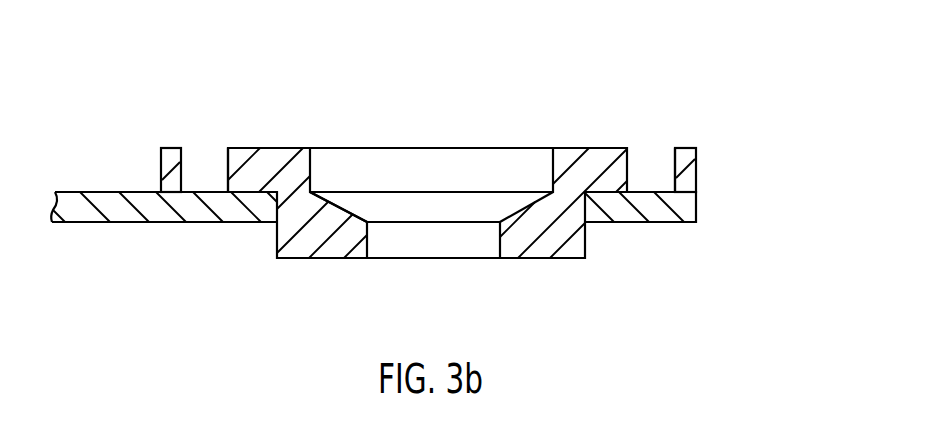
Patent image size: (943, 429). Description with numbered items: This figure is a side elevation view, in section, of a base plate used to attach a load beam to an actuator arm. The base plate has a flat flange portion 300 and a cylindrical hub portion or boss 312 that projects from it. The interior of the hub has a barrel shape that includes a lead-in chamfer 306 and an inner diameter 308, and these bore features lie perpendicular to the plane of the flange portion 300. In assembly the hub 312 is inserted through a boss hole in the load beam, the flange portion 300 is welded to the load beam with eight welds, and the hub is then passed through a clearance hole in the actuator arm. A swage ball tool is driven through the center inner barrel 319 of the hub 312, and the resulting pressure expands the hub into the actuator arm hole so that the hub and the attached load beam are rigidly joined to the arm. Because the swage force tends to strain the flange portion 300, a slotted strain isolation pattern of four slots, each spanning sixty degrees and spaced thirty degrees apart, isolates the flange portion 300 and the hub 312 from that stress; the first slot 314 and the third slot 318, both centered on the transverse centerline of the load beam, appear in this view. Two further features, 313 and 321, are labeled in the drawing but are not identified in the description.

The flange portion 300 is at (161, 156).
The lead-in chamfer 306 is at (356, 216).
The inner diameter 308 is at (367, 244).
The hub portion 312 is at (300, 250).
The flange plate 313 is at (87, 222).
The first slot 314 is at (228, 163).
The third slot 318 is at (675, 162).
The center inner barrel 319 is at (428, 177).
The upper housing portion 321 is at (279, 156).